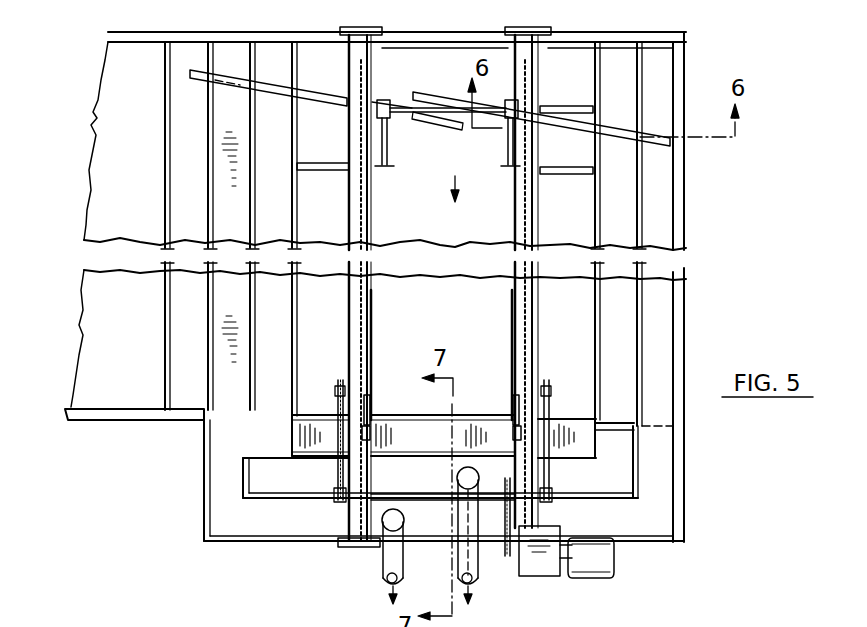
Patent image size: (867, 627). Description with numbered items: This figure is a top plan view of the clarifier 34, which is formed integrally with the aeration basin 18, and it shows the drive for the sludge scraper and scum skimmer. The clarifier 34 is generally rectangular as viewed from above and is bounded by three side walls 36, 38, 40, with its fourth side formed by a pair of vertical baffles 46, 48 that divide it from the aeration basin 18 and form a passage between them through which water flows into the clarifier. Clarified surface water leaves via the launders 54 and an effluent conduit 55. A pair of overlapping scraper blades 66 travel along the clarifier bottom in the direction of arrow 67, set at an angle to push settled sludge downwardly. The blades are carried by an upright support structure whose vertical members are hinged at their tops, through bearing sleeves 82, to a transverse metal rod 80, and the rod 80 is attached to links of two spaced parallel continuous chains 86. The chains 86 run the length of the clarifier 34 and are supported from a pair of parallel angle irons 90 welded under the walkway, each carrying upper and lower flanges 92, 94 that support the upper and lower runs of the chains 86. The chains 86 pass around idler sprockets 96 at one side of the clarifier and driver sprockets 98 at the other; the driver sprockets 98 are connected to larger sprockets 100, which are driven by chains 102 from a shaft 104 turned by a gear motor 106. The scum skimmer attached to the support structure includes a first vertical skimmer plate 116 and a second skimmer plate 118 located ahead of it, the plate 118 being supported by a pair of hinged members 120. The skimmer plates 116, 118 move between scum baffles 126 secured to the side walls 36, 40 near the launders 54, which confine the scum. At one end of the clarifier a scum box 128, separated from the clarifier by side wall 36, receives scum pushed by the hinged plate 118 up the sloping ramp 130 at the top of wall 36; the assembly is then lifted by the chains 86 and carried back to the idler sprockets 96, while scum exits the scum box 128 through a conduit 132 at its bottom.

The aeration basin 18 is at (96, 304).
The clarifier 34 is at (714, 233).
The side wall 36 is at (614, 420).
The side wall 38 is at (685, 318).
The side wall 40 is at (664, 42).
The clarifier outer baffle 46 is at (166, 125).
The inner clarifier baffle 48 is at (209, 166).
The launders 54 is at (196, 414).
The effluent conduit 55 is at (380, 562).
The scraper blades 66 is at (278, 84).
The arrow 67 is at (452, 190).
The transverse metal rod 80 is at (412, 108).
The bearing sleeves 82 is at (385, 102).
The continuous chains 86 is at (348, 184).
The angle irons 90 is at (348, 297).
The upper flange 92 is at (371, 324).
The lower flange 94 is at (372, 382).
The idler sprockets 96 is at (358, 72).
The driver sprockets 98 is at (372, 418).
The larger sprockets 100 is at (341, 382).
The chains 102 is at (334, 448).
The shaft 104 is at (434, 500).
The gear motor 106 is at (612, 564).
The first vertical skimmer plate 116 is at (584, 106).
The second skimmer plate 118 is at (565, 176).
The members 120 is at (386, 152).
The scum baffles 126 is at (295, 308).
The scum box 128 is at (258, 464).
The ramp 130 is at (415, 450).
The conduit 132 is at (480, 568).